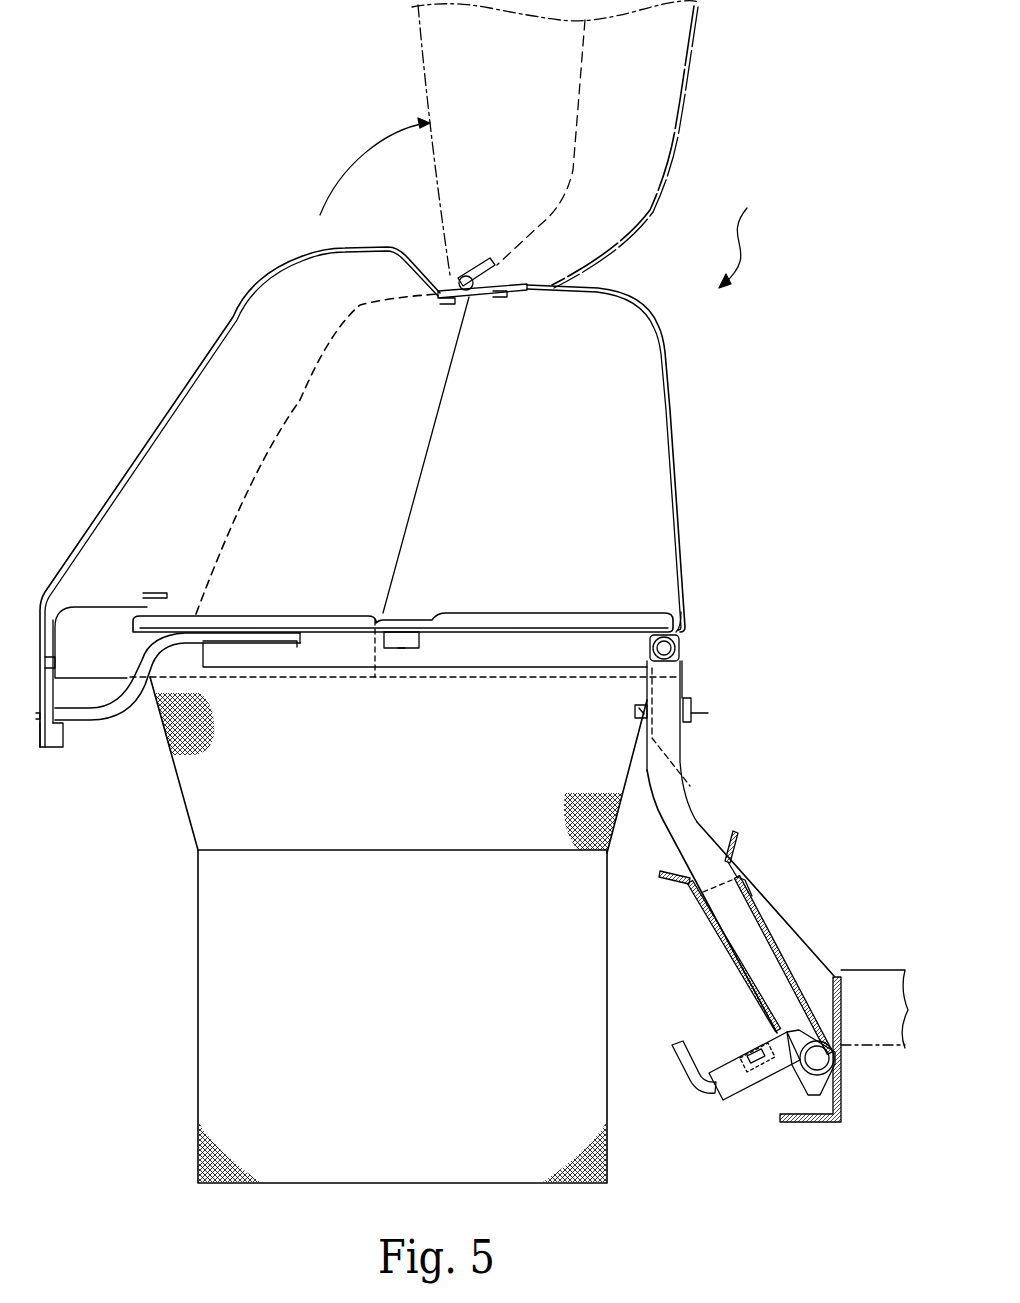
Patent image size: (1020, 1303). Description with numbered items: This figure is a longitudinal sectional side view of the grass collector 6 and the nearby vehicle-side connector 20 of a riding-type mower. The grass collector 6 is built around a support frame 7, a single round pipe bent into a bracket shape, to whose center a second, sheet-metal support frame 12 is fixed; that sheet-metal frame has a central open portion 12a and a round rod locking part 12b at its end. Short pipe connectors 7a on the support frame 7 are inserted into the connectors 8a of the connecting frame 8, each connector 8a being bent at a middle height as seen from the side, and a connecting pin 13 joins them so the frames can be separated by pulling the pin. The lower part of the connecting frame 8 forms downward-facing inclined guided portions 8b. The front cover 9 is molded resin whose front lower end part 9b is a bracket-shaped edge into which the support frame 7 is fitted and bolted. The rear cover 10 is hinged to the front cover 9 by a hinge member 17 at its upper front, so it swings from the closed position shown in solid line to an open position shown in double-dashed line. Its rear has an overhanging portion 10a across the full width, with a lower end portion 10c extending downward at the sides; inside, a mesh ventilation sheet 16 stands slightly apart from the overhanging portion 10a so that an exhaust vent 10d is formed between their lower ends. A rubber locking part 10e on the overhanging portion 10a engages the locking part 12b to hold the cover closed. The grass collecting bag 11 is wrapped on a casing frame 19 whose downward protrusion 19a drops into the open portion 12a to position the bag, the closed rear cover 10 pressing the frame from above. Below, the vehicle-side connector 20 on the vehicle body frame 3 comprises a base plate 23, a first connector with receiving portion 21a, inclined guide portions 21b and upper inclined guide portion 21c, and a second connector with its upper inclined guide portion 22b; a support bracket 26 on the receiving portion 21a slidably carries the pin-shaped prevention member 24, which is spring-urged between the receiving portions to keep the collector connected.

The vehicle body frame 3 is at (882, 1033).
The grass collector 6 is at (751, 240).
The support frame 7 is at (681, 648).
The connector 7a is at (687, 771).
The connecting frame 8 is at (655, 829).
The connector 8a is at (645, 718).
The inclined guided portion 8b is at (735, 935).
The front cover 9 is at (672, 392).
The front lower end part 9b is at (692, 604).
The rear cover 10 is at (677, 127).
The overhanging portion 10a is at (241, 360).
The lower end portion 10c is at (102, 684).
The exhaust vent 10d is at (94, 618).
The locking part 10e is at (53, 748).
The grass collecting bag 11 is at (200, 995).
The support frame 12 is at (530, 612).
The open portion 12a is at (380, 612).
The locking part 12b is at (88, 722).
The connecting pin 13 is at (708, 713).
The ventilation sheet 16 is at (293, 407).
The hinge member 17 is at (458, 279).
The casing frame 19 is at (407, 622).
The protrusion 19a is at (398, 650).
The vehicle-side connector 20 is at (742, 999).
The receiving portion 21a is at (710, 927).
The inclined guide portion 21b is at (793, 942).
The upper inclined guide portion 21c is at (663, 876).
The upper inclined guide portion 22b is at (737, 852).
The base plate 23 is at (832, 993).
The prevention member 24 is at (688, 1068).
The support bracket 26 is at (722, 1102).